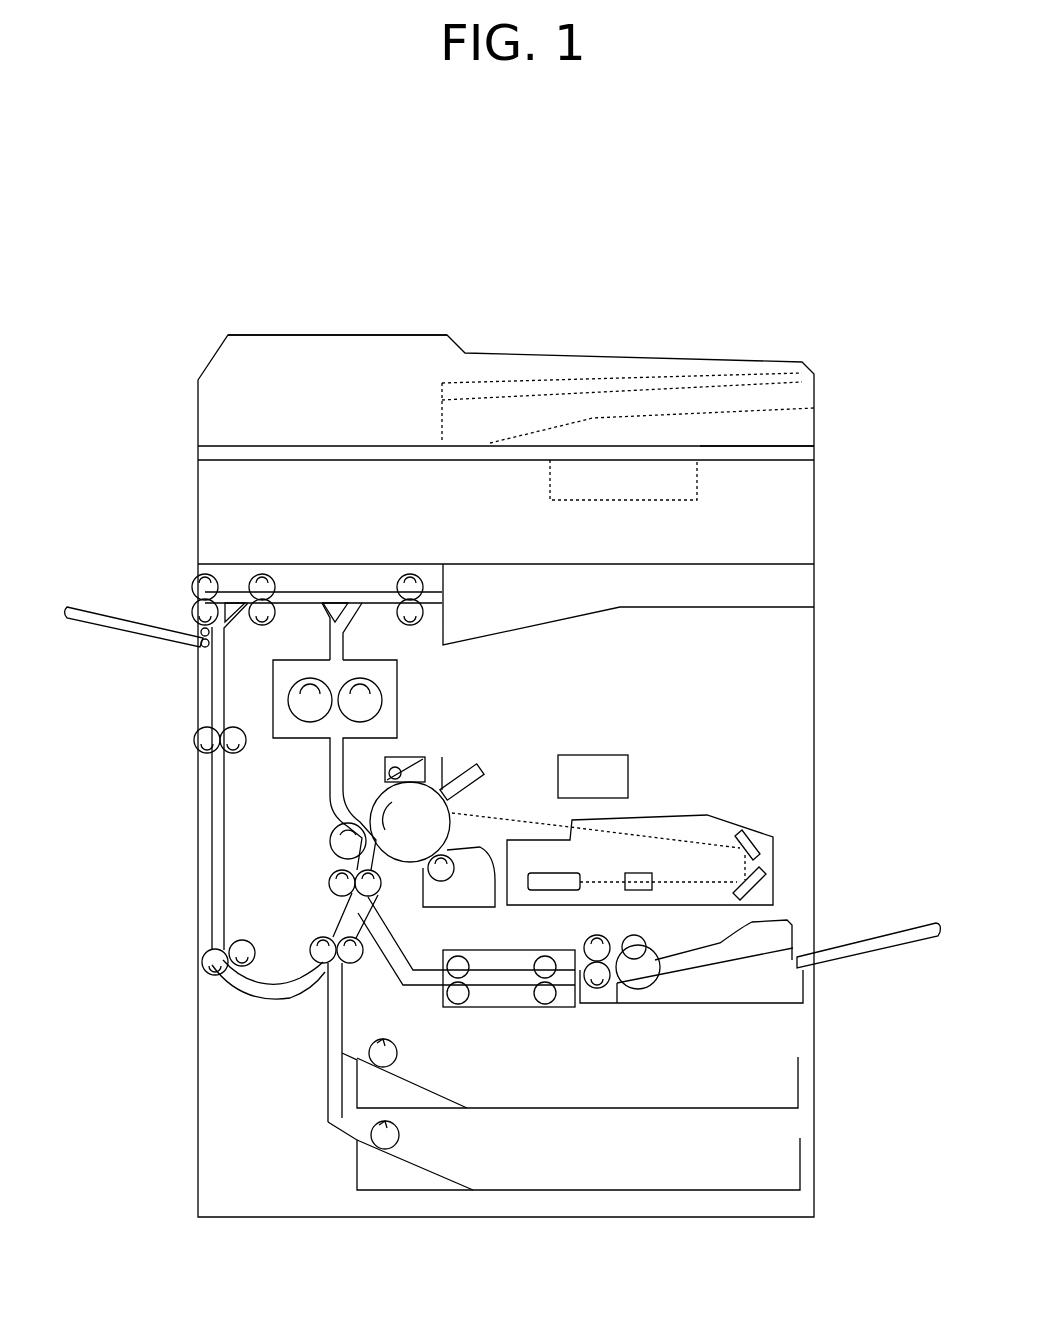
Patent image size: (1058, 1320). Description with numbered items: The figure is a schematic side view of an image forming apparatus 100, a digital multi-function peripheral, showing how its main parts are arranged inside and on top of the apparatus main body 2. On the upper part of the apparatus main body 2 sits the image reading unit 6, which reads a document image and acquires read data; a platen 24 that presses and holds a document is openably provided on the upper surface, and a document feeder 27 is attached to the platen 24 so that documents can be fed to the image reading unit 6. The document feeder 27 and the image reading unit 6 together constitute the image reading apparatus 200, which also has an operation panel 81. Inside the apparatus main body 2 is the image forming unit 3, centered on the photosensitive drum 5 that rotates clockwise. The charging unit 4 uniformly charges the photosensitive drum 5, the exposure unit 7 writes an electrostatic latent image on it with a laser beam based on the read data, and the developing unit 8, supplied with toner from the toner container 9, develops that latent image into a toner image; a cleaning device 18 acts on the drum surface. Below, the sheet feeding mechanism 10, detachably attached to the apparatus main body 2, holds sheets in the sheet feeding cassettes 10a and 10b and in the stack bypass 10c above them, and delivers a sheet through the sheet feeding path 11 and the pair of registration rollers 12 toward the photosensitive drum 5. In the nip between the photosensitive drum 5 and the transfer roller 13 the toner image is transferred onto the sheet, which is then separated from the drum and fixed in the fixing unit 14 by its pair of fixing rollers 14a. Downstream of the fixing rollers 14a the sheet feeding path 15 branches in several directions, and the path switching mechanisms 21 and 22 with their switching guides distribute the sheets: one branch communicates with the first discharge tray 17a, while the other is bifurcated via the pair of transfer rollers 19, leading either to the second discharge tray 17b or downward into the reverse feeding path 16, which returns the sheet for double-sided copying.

The image forming apparatus 100 is at (763, 286).
The image reading apparatus 200 is at (120, 308).
The document feeder 27 is at (237, 367).
The image reading unit 6 is at (210, 520).
The platen 24 is at (815, 450).
The operation panel 81 is at (620, 500).
The apparatus main body 2 is at (816, 710).
The first discharge tray 17a is at (513, 630).
The second discharge tray 17b is at (113, 607).
The pair of transfer rollers 19 is at (268, 582).
The path switching mechanism 21 is at (330, 600).
The path switching mechanism 22 is at (207, 650).
The sheet feeding path 15 is at (328, 647).
The fixing unit 14 is at (267, 698).
The reverse feeding path 16 is at (213, 787).
The pair of fixing rollers 14a is at (393, 677).
The image forming unit 3 is at (465, 745).
The cleaning device 18 is at (403, 756).
The charging unit 4 is at (482, 790).
The photosensitive drum 5 is at (400, 860).
The transfer roller 13 is at (337, 845).
The pair of registration rollers 12 is at (330, 897).
The developing unit 8 is at (448, 902).
The toner container 9 is at (600, 755).
The exposure unit 7 is at (665, 828).
The sheet feeding path 11 is at (330, 993).
The sheet feeding mechanism 10 is at (835, 1028).
The sheet feeding cassette 10a is at (783, 1088).
The sheet feeding cassette 10b is at (790, 1172).
The stack bypass 10c is at (843, 938).